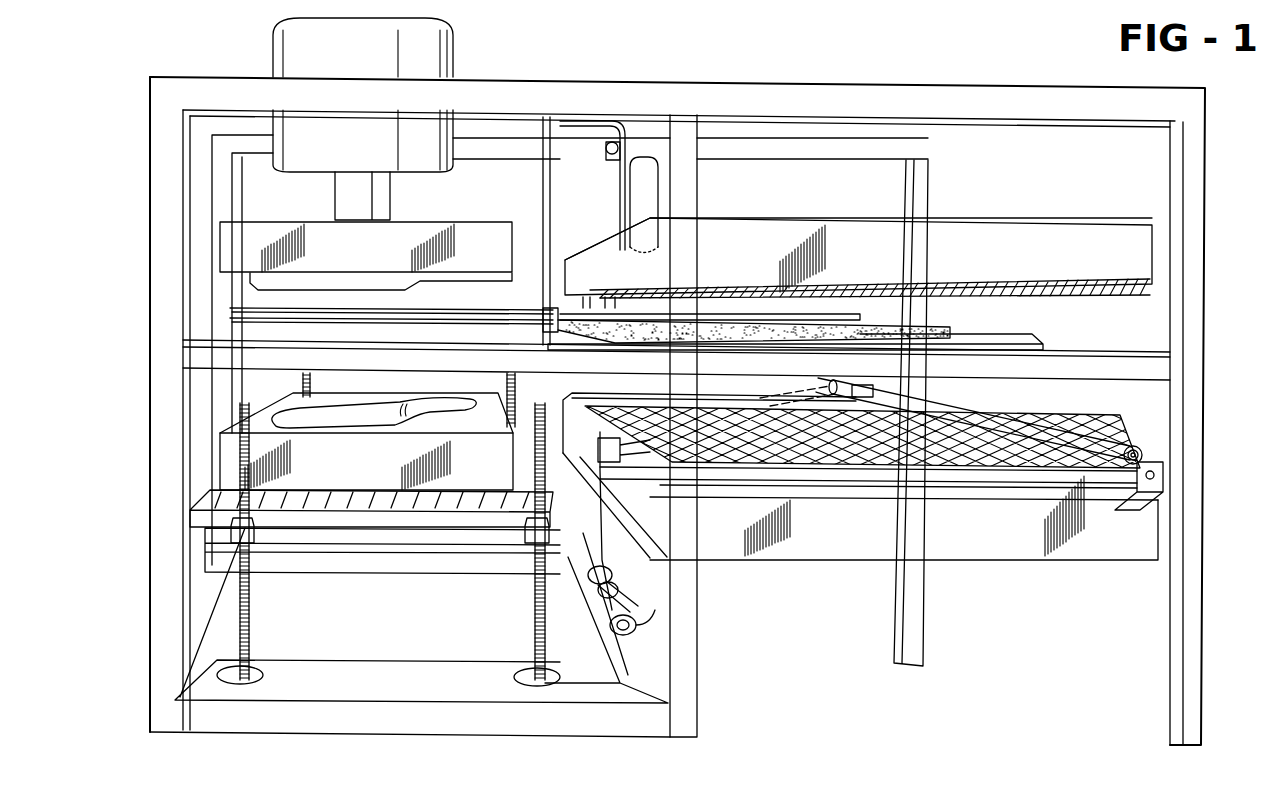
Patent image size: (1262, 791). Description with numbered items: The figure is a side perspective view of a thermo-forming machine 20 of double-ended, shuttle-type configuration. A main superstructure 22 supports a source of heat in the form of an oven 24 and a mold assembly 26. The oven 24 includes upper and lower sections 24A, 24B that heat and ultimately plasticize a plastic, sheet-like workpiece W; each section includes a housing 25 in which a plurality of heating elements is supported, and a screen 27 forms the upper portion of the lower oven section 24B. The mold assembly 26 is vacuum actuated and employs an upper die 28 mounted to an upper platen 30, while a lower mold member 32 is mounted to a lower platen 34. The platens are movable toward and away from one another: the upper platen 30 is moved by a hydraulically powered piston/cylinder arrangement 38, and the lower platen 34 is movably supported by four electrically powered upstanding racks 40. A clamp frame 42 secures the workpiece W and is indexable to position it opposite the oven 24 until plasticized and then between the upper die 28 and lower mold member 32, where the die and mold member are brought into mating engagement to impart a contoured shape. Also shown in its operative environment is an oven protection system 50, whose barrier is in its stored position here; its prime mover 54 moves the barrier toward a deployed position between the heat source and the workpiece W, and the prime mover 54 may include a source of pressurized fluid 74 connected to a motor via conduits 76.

The thermo-forming machine 20 is at (767, 62).
The main superstructure 22 is at (1216, 174).
The oven 24 is at (1154, 253).
The upper oven section 24A is at (993, 243).
The lower oven section 24B is at (992, 462).
The housing 25 is at (957, 545).
The mold assembly 26 is at (222, 401).
The screen 27 is at (825, 450).
The upper die 28 is at (290, 283).
The upper platen 30 is at (226, 240).
The lower mold member 32 is at (228, 468).
The lower platen 34 is at (192, 522).
The piston/cylinder arrangement 38 is at (300, 133).
The upstanding racks 40 is at (248, 585).
The clamp frame 42 is at (1012, 341).
The oven protection system 50 is at (1128, 444).
The prime mover 54 is at (666, 622).
The source of pressurized fluid 74 is at (640, 198).
The conduits 76 is at (598, 213).
The workpiece W is at (600, 325).